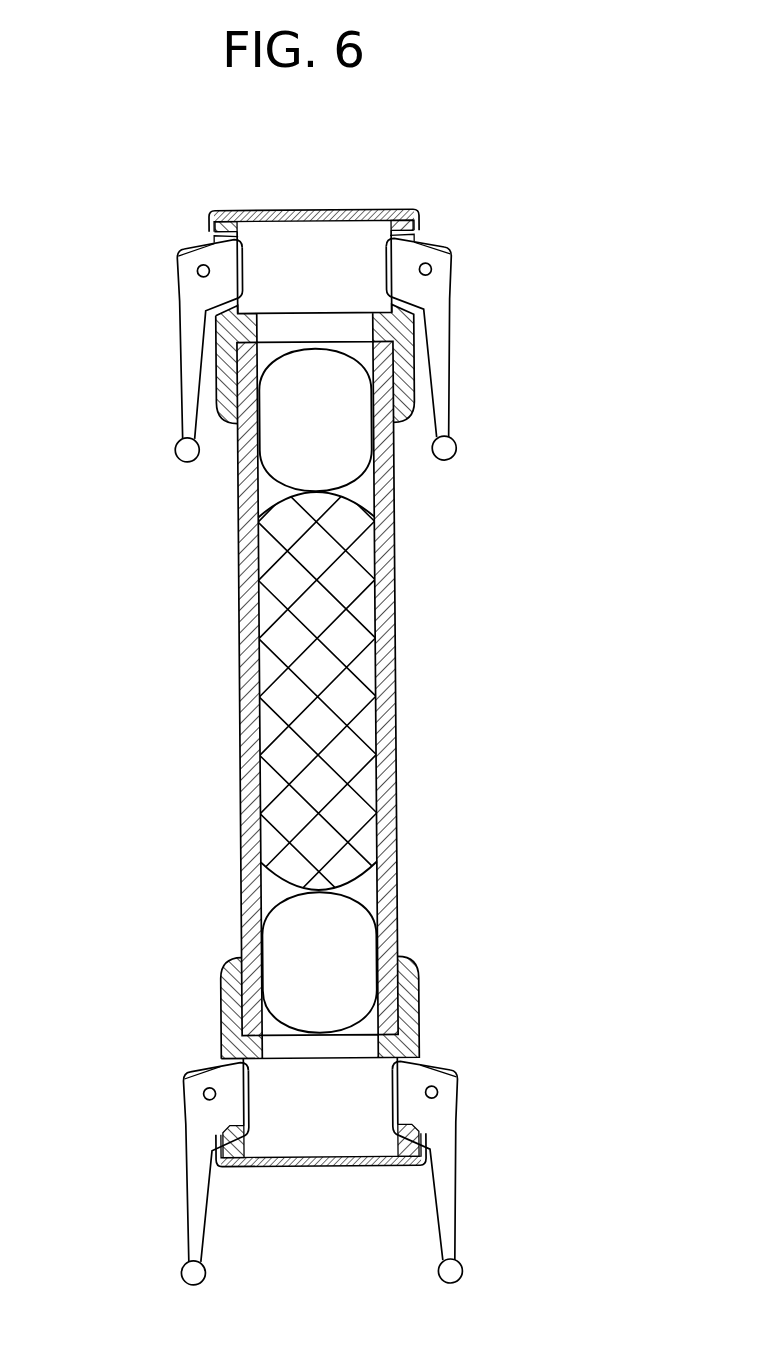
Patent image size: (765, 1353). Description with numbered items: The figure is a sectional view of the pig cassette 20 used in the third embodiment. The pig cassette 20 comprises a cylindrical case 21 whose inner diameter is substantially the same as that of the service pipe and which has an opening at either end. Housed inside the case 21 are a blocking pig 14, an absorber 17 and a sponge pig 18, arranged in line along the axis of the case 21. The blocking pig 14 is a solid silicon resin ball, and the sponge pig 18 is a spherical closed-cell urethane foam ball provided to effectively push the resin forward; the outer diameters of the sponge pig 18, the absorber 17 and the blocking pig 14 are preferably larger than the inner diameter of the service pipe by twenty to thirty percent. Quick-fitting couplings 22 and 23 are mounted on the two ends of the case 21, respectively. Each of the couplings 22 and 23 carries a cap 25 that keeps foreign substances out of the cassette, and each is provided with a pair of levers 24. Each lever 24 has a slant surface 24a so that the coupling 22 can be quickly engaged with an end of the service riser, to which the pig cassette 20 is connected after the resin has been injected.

The blocking pig 14 is at (357, 452).
The absorber 17 is at (358, 692).
The sponge pig 18 is at (355, 961).
The pig cassette 20 is at (234, 617).
The case 21 is at (243, 700).
The quick-fitting coupling 22 is at (233, 1030).
The quick-fitting coupling 23 is at (410, 328).
The lever 24 is at (452, 395).
The slant surface 24a is at (245, 262).
The cap 25 is at (355, 212).